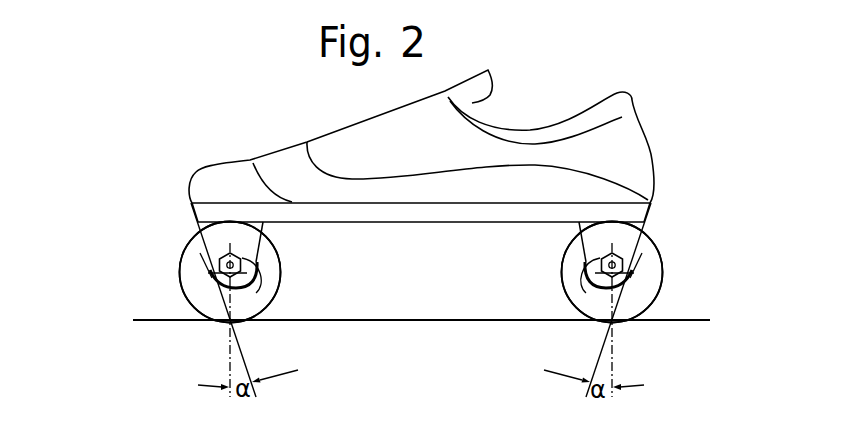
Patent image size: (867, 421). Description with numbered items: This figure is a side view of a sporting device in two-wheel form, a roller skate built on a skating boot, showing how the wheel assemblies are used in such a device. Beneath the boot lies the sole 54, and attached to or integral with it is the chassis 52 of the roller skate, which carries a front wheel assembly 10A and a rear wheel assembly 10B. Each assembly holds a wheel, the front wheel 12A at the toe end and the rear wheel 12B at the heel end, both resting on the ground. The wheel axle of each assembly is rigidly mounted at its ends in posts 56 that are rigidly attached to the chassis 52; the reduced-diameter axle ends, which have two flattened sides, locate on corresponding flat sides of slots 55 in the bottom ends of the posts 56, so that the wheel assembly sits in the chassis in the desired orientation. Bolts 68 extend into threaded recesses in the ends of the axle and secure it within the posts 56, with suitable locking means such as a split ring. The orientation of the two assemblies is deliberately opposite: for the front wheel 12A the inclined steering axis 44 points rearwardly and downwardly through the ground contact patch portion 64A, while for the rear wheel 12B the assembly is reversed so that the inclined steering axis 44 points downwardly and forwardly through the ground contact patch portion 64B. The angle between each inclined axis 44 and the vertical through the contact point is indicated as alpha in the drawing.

The front wheel 10A is at (173, 277).
The rear wheel 10B is at (666, 291).
The front wheel 12A is at (185, 240).
The rear wheel 12B is at (656, 240).
The chassis 52 is at (194, 208).
The sole 54 is at (625, 104).
The post 56 is at (270, 236).
The slot 55 is at (258, 292).
The bolt 68 is at (243, 263).
The ground contact patch portion 64A is at (228, 323).
The ground contact patch portion 64B is at (614, 323).
The inclined steering axis 44 is at (256, 363).